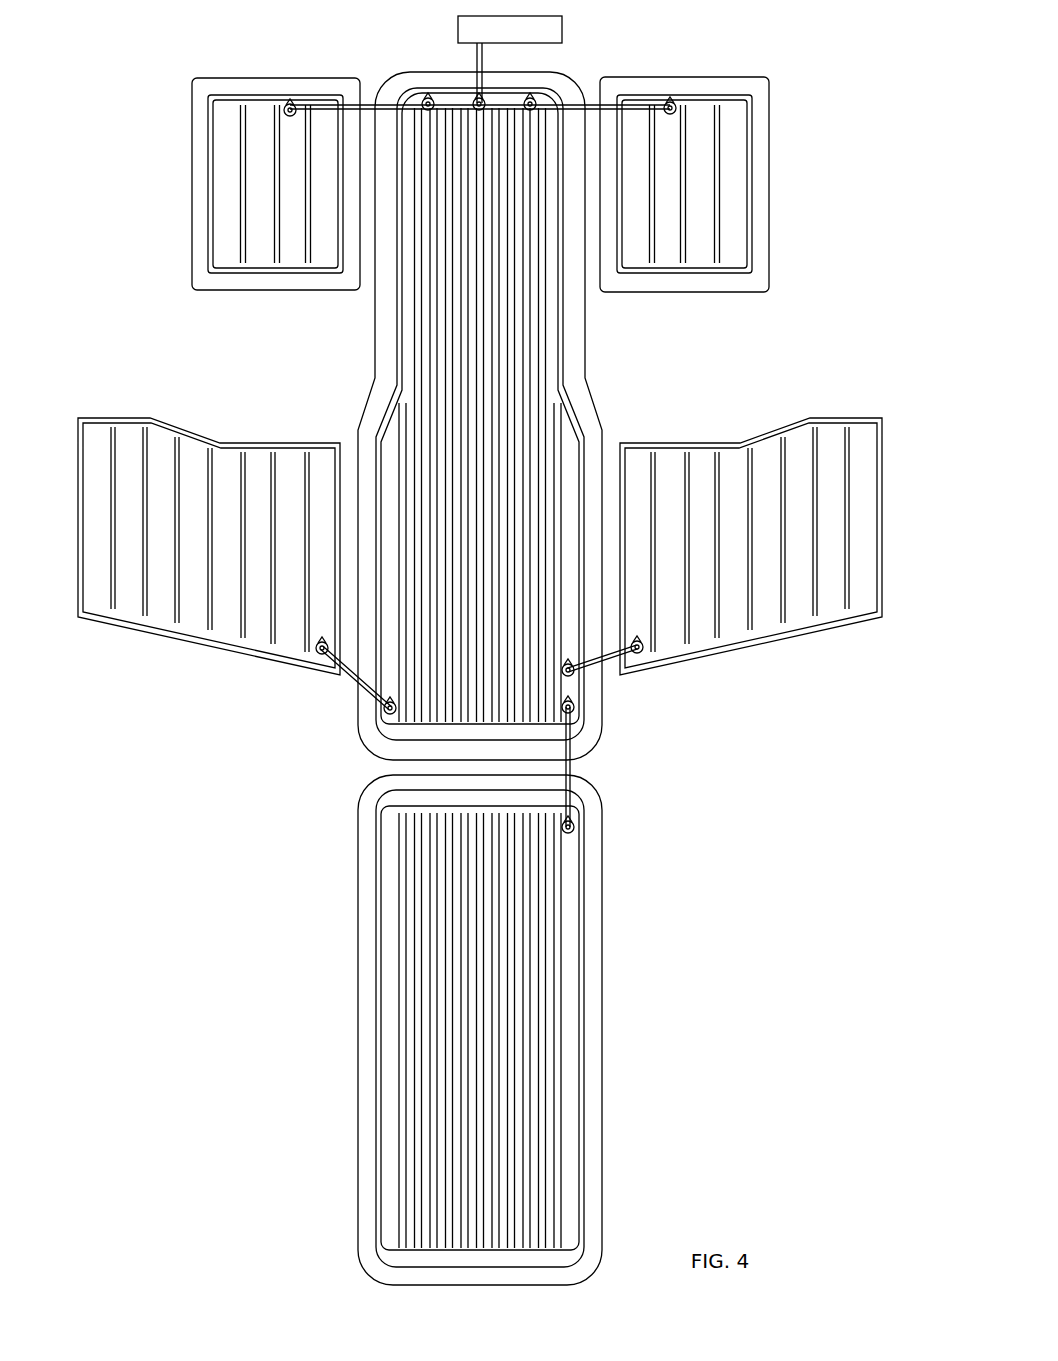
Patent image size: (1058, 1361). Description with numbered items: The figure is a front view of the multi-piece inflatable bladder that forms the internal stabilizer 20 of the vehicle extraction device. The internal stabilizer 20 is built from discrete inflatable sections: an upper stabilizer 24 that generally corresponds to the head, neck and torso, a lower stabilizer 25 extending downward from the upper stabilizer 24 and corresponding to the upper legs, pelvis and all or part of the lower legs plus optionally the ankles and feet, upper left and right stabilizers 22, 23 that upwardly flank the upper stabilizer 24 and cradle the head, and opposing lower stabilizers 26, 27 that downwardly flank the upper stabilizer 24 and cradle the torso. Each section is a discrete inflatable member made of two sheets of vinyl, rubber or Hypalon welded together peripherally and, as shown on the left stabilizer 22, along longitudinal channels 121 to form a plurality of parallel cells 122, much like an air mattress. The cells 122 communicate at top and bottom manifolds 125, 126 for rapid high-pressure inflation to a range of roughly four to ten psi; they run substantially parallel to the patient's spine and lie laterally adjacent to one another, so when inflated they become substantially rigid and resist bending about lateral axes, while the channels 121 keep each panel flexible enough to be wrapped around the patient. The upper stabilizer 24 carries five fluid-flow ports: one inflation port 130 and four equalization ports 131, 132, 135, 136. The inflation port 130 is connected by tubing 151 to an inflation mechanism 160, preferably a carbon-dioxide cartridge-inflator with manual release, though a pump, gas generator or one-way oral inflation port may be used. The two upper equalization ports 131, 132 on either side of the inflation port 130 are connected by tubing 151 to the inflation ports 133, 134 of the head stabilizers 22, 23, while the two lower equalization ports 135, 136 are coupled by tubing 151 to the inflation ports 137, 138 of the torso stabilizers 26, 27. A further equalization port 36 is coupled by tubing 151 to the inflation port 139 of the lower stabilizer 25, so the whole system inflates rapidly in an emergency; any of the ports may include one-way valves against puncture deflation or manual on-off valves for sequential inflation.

The internal stabilizer 20 is at (840, 193).
The upper left stabilizer 22 is at (192, 80).
The upper right stabilizer 23 is at (770, 78).
The upper stabilizer 24 is at (588, 355).
The lower stabilizer 25 is at (358, 880).
The opposing lower stabilizer 26 is at (92, 417).
The opposing lower stabilizer 27 is at (835, 417).
The connector 36 is at (576, 673).
The longitudinal channels 121 is at (273, 177).
The parallel cells 122 is at (258, 243).
The top manifold 125 is at (258, 100).
The bottom manifold 126 is at (293, 263).
The inflation port 130 is at (480, 100).
The upper equalization port 131 is at (426, 100).
The upper equalization port 132 is at (530, 100).
The inflation port 133 is at (290, 104).
The inflation port 134 is at (670, 104).
The lower equalization port 135 is at (383, 718).
The lower equalization port 136 is at (576, 712).
The inflation port 137 is at (316, 655).
The inflation port 138 is at (644, 657).
The inflation port 139 is at (580, 829).
The tubing 151 is at (372, 105).
The inflation mechanism 160 is at (490, 40).